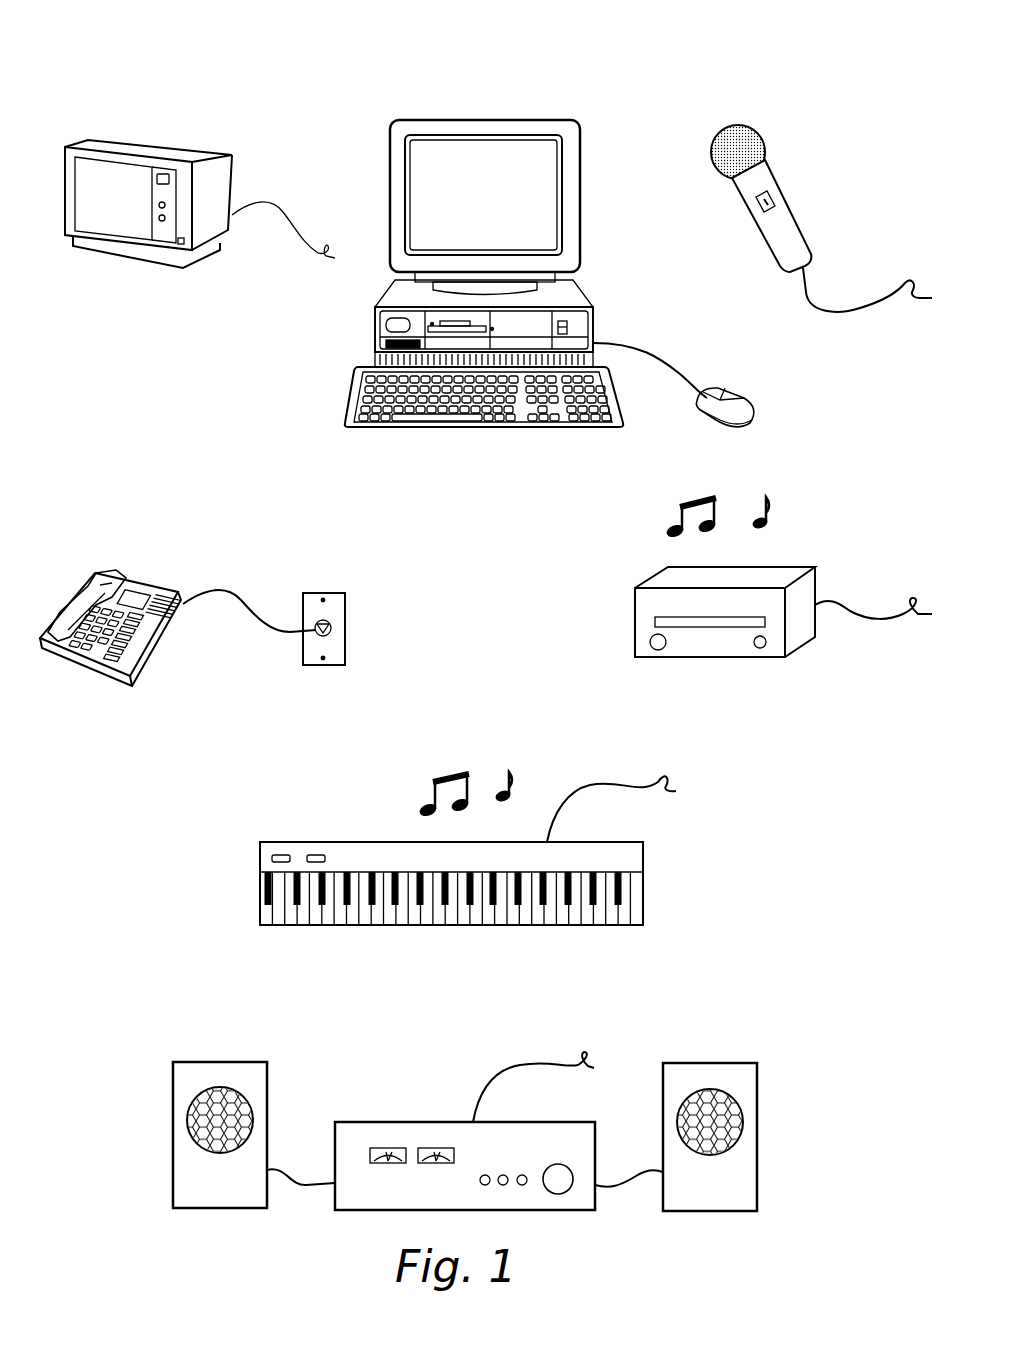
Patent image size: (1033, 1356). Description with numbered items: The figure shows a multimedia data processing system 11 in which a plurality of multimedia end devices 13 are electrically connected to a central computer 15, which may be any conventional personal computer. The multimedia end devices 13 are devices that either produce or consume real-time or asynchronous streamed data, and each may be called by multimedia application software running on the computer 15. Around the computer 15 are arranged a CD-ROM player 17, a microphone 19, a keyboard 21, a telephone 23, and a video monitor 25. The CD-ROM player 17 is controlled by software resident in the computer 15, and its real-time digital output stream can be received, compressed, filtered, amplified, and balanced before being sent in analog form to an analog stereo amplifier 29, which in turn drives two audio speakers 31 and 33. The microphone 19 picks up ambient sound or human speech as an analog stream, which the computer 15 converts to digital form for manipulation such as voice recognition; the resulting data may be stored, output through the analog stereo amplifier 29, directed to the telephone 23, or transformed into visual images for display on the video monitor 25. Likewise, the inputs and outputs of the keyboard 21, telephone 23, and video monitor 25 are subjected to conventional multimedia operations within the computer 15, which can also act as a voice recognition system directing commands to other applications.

The multimedia data processing system 11 is at (606, 86).
The multimedia end devices 13 is at (818, 171).
The computer 15 is at (497, 120).
The CD-ROM player 17 is at (752, 660).
The microphone 19 is at (776, 170).
The keyboard 21 is at (316, 842).
The telephone 23 is at (150, 585).
The video monitor 25 is at (178, 146).
The analog stereo amplifier 29 is at (410, 1122).
The audio speaker 31 is at (237, 1062).
The audio speaker 33 is at (706, 1063).